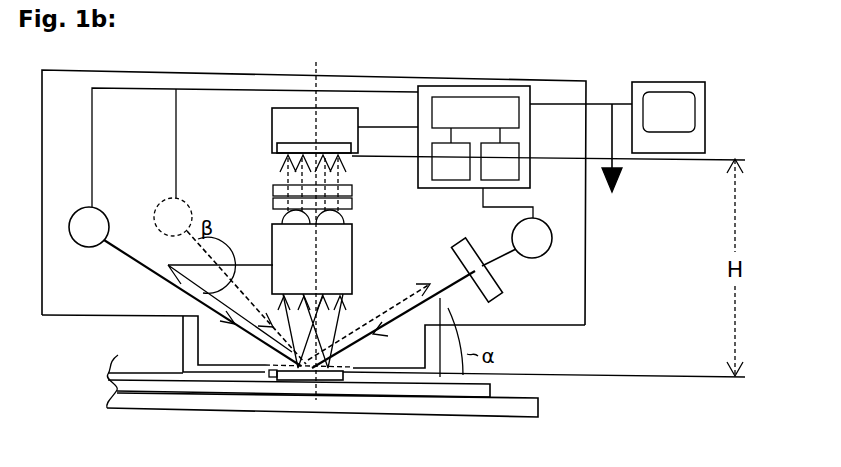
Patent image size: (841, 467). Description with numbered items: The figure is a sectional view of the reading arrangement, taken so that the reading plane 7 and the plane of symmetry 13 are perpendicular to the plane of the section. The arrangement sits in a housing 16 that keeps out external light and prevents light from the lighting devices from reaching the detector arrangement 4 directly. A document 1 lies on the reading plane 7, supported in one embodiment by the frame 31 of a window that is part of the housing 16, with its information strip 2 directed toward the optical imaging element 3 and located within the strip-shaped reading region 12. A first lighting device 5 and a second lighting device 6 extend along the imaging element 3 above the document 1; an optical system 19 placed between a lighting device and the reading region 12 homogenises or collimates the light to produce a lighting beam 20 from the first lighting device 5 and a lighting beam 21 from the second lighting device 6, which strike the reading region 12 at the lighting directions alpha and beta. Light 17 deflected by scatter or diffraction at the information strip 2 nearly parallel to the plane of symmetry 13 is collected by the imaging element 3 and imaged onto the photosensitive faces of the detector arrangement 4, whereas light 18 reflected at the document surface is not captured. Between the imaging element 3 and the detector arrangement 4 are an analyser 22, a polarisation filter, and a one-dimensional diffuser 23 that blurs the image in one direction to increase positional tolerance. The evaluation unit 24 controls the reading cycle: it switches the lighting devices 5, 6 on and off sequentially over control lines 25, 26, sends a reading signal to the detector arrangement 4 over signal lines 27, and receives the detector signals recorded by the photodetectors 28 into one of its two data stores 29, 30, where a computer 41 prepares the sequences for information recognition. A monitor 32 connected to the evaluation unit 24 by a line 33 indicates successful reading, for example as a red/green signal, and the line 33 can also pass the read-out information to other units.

The document 1 is at (342, 395).
The information strip 2 is at (288, 382).
The optical imaging element 3 is at (352, 250).
The detector arrangement 4 is at (272, 122).
The first lighting device 5 is at (528, 258).
The second lighting device 6 is at (104, 214).
The reading plane 7 is at (380, 405).
The reading region 12 is at (270, 377).
The plane of symmetry 13 is at (316, 400).
The housing 16 is at (586, 290).
The deflected or diffracted light 17 is at (305, 323).
The reflected light 18 is at (275, 265).
The optical system 19 is at (460, 242).
The lighting beam 20 is at (495, 326).
The lighting beam 21 is at (175, 290).
The analyser 22 is at (273, 203).
The one-dimensional diffuser 23 is at (352, 196).
The evaluation unit 24 is at (495, 137).
The control line 25 is at (522, 207).
The control line 26 is at (175, 147).
The signal lines 27 is at (372, 128).
The photodetectors 28 is at (274, 156).
The data store 29 is at (439, 172).
The data store 30 is at (488, 172).
The frame 31 is at (192, 346).
The monitor 32 is at (656, 129).
The line 33 is at (615, 176).
The computer 41 is at (463, 123).